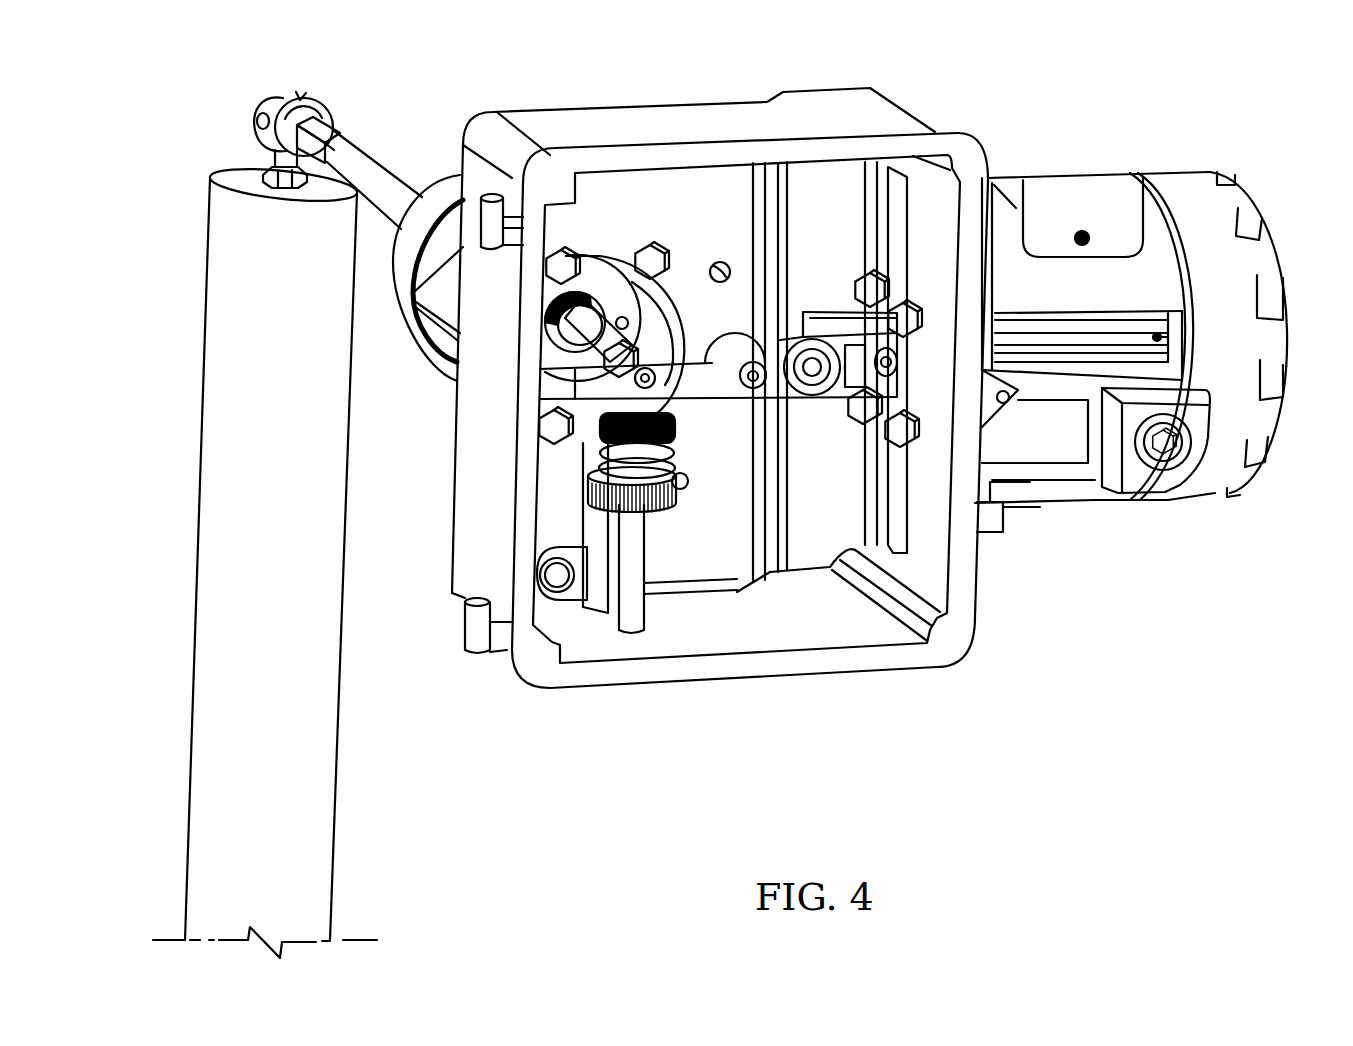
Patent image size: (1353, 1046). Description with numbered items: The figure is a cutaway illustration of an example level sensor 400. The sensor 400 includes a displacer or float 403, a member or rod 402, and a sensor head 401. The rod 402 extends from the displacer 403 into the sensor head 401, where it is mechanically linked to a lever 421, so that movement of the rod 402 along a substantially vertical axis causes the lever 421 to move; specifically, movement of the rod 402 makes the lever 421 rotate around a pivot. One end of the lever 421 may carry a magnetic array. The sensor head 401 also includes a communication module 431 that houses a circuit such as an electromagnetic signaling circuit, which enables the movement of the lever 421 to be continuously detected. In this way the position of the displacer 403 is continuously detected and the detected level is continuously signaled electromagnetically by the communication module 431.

The level sensor 400 is at (167, 112).
The sensor head 401 is at (703, 80).
The rod 402 is at (384, 152).
The displacer 403 is at (308, 287).
The lever 421 is at (710, 366).
The communication module 431 is at (1085, 176).